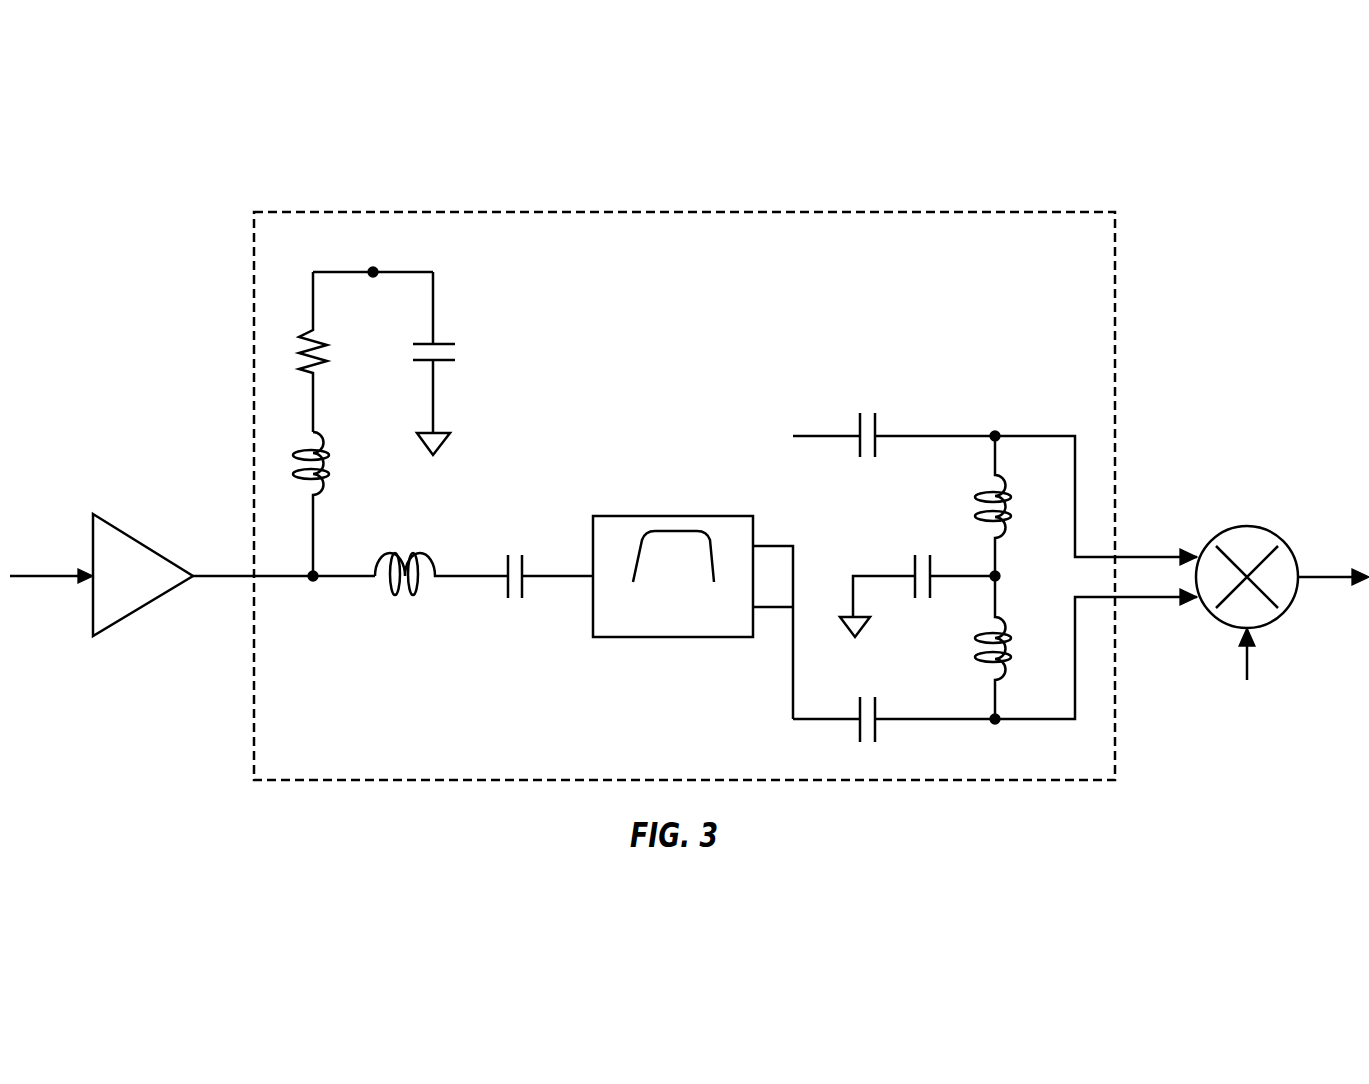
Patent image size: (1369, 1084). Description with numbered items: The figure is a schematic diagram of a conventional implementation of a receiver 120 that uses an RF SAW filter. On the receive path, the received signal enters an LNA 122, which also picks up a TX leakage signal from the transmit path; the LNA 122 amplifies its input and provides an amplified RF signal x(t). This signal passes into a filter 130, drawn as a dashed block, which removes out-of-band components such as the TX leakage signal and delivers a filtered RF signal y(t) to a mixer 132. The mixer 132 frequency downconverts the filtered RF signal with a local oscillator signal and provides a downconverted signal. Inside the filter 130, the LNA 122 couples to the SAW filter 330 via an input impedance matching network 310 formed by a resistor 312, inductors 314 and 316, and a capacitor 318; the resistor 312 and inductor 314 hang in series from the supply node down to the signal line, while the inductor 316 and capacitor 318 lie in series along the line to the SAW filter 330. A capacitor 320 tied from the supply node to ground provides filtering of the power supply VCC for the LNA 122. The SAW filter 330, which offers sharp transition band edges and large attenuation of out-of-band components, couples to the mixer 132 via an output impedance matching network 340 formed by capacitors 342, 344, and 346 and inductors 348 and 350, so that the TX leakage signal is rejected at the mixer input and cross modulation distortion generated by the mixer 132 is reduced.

The receiver 120 is at (1197, 170).
The LNA 122 is at (140, 545).
The filter 130 is at (682, 212).
The mixer 132 is at (1240, 527).
The input impedance matching network 310 is at (511, 392).
The resistor 312 is at (326, 346).
The inductor 314 is at (332, 470).
The inductor 316 is at (402, 554).
The capacitor 318 is at (524, 564).
The capacitor 320 is at (446, 347).
The SAW filter 330 is at (667, 516).
The output impedance matching network 340 is at (815, 395).
The capacitor 342 is at (877, 426).
The capacitor 344 is at (877, 710).
The capacitor 346 is at (914, 566).
The inductor 348 is at (975, 511).
The inductor 350 is at (975, 653).